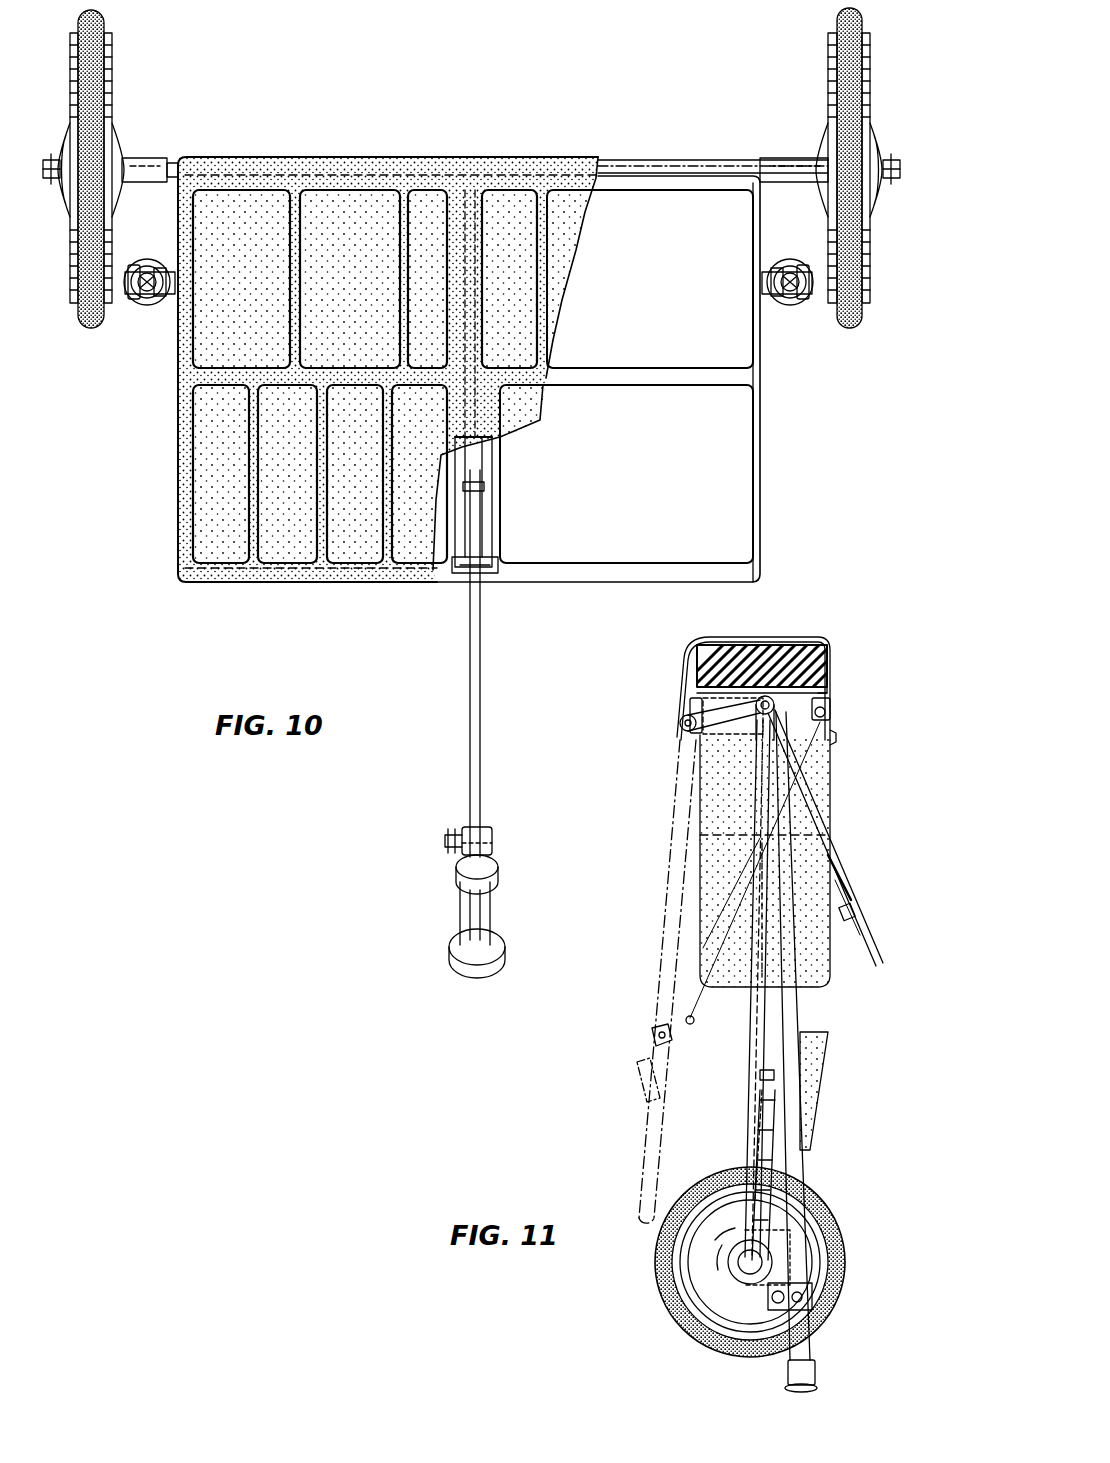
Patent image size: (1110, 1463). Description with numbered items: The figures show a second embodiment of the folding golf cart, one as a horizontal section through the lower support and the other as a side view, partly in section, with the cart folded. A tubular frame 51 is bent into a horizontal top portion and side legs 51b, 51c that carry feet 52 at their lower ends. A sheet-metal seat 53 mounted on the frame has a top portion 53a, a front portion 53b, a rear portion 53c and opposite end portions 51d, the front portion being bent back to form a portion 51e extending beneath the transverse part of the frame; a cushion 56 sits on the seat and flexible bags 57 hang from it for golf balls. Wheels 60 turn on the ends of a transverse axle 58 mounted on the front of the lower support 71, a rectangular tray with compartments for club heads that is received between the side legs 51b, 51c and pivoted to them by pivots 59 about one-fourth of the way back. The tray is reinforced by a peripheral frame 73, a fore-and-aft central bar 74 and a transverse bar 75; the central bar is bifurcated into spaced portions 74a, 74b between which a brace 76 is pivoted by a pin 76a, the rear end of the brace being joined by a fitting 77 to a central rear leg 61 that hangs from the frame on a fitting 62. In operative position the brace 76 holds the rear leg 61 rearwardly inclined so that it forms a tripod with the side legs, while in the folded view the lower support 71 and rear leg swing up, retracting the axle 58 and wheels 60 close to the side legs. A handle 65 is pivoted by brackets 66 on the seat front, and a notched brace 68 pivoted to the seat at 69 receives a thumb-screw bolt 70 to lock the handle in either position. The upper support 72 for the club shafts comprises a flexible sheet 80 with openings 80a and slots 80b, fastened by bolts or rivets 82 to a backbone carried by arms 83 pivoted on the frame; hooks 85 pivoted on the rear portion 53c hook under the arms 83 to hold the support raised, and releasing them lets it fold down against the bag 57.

In FIG. 11, the tubular frame 51 is at (760, 1003).
In FIG. 10, the side leg 51b is at (150, 302).
In FIG. 10, the side leg 51c is at (789, 302).
In FIG. 11, the seat end portion 51d is at (720, 803).
In FIG. 11, the bent-back seat portion 51e is at (740, 738).
In FIG. 10, the foot 52 is at (147, 258).
In FIG. 11, the foot 52 is at (770, 1300).
In FIG. 11, the seat 53 is at (732, 680).
In FIG. 11, the seat top portion 53a is at (825, 680).
In FIG. 11, the seat front portion 53b is at (688, 702).
In FIG. 11, the seat rear portion 53c is at (832, 705).
In FIG. 11, the cushion 56 is at (790, 648).
In FIG. 11, the bag 57 is at (705, 884).
In FIG. 10, the axle 58 is at (680, 163).
In FIG. 11, the axle 58 is at (746, 1268).
In FIG. 10, the pivot 59 is at (178, 283).
In FIG. 11, the pivot 59 is at (740, 1192).
In FIG. 10, the wheel 60 is at (105, 14).
In FIG. 11, the wheel 60 is at (693, 1340).
In FIG. 10, the central rear leg 61 is at (492, 910).
In FIG. 11, the central rear leg 61 is at (792, 1003).
In FIG. 11, the fitting 62 is at (757, 706).
In FIG. 11, the handle 65 is at (663, 945).
In FIG. 11, the bracket 66 is at (690, 728).
In FIG. 11, the brace 68 is at (708, 1034).
In FIG. 11, the brace pivot 69 is at (835, 713).
In FIG. 11, the bolt 70 is at (650, 1034).
In FIG. 10, the lower support 71 is at (770, 465).
In FIG. 11, the lower support 71 is at (830, 1070).
In FIG. 11, the upper support 72 is at (875, 968).
In FIG. 10, the peripheral frame 73 is at (180, 590).
In FIG. 10, the central reinforcing bar 74 is at (470, 282).
In FIG. 11, the central reinforcing bar 74 is at (753, 1160).
In FIG. 10, the spaced portion of central reinforcement 74a is at (490, 447).
In FIG. 10, the spaced portion of central reinforcement 74b is at (492, 467).
In FIG. 11, the spaced portion of central reinforcement 74b is at (763, 1112).
In FIG. 10, the transverse reinforcing bar 75 is at (215, 390).
In FIG. 10, the brace 76 is at (482, 695).
In FIG. 11, the brace 76 is at (773, 1233).
In FIG. 10, the pin 76a is at (490, 490).
In FIG. 11, the pin 76a is at (760, 1075).
In FIG. 10, the fitting 77 is at (493, 843).
In FIG. 11, the fitting 77 is at (777, 1312).
In FIG. 11, the flexible sheet 80 is at (878, 960).
In FIG. 11, the opening 80a is at (845, 892).
In FIG. 11, the slot 80b is at (836, 870).
In FIG. 11, the bolt or rivet 82 is at (855, 912).
In FIG. 11, the arm 83 is at (815, 818).
In FIG. 11, the hook 85 is at (838, 738).